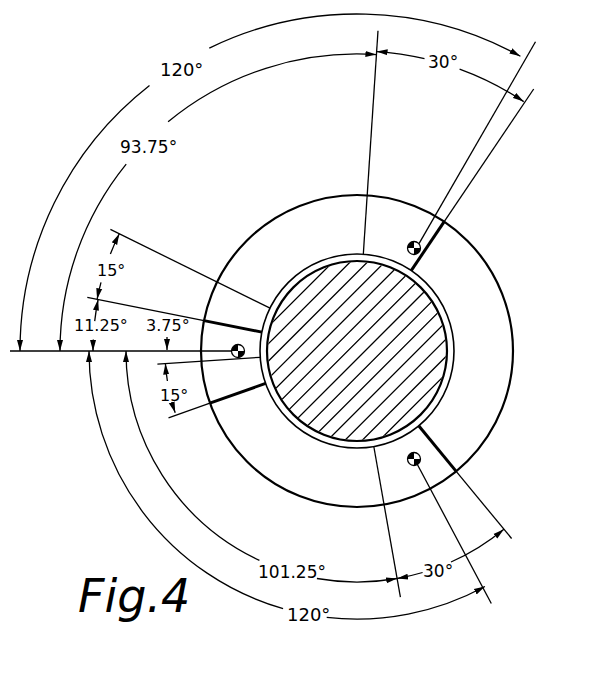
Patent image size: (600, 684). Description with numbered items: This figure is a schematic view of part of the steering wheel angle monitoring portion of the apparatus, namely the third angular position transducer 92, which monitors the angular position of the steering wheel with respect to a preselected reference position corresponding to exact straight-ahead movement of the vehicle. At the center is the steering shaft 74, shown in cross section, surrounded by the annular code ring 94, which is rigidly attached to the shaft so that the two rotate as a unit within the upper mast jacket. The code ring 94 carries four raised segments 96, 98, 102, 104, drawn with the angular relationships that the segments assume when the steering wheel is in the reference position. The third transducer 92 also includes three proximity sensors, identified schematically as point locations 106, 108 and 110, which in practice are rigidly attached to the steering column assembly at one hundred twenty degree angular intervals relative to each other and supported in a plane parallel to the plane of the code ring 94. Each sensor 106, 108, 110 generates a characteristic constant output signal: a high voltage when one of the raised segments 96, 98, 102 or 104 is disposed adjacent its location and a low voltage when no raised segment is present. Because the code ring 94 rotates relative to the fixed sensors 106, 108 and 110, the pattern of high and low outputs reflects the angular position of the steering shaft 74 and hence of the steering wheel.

The steering shaft 74 is at (432, 378).
The third angular position transducer 92 is at (514, 289).
The annular code ring 94 is at (514, 340).
The raised segment 96 is at (225, 388).
The raised segment 98 is at (232, 305).
The raised segment 102 is at (393, 218).
The raised segment 104 is at (390, 487).
The proximity sensor 106 is at (241, 358).
The proximity sensor 108 is at (421, 251).
The proximity sensor 110 is at (420, 452).